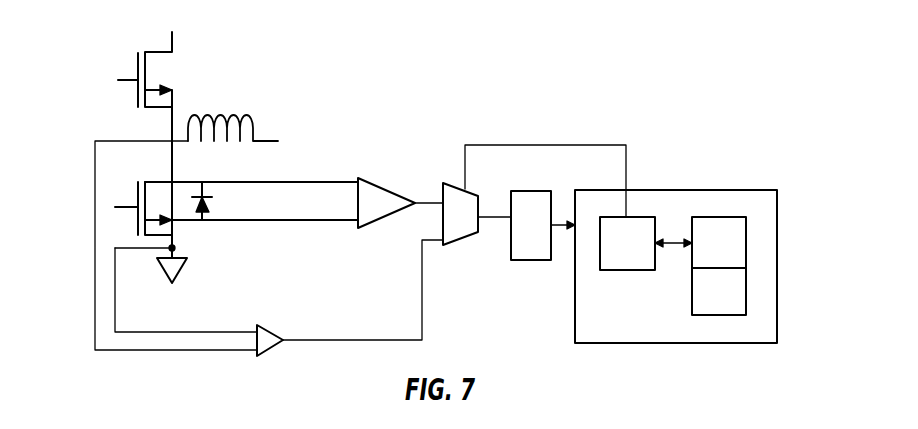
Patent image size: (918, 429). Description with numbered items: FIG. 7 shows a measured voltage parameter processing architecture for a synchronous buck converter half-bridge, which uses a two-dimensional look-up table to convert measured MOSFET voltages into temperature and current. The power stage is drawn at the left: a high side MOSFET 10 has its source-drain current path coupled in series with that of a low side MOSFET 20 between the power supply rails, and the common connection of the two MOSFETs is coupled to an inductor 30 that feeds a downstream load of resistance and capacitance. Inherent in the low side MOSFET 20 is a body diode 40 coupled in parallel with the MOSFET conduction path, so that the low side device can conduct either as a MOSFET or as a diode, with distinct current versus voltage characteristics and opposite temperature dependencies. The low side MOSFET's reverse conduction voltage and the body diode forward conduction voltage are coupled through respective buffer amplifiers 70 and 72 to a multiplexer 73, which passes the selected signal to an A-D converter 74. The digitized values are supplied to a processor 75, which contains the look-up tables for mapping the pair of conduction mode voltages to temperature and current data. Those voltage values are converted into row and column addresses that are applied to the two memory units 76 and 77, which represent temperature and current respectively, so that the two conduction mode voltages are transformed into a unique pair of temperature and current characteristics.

The high side MOSFET 10 is at (162, 66).
The low side MOSFET 20 is at (138, 192).
The inductor 30 is at (272, 102).
The body diode 40 is at (212, 200).
The buffer amplifier 70 is at (268, 330).
The buffer amplifier 72 is at (373, 226).
The multiplexer 73 is at (466, 246).
The A-D converter 74 is at (544, 262).
The processor 75 is at (640, 272).
The memory unit 76 is at (748, 238).
The memory unit 77 is at (748, 290).